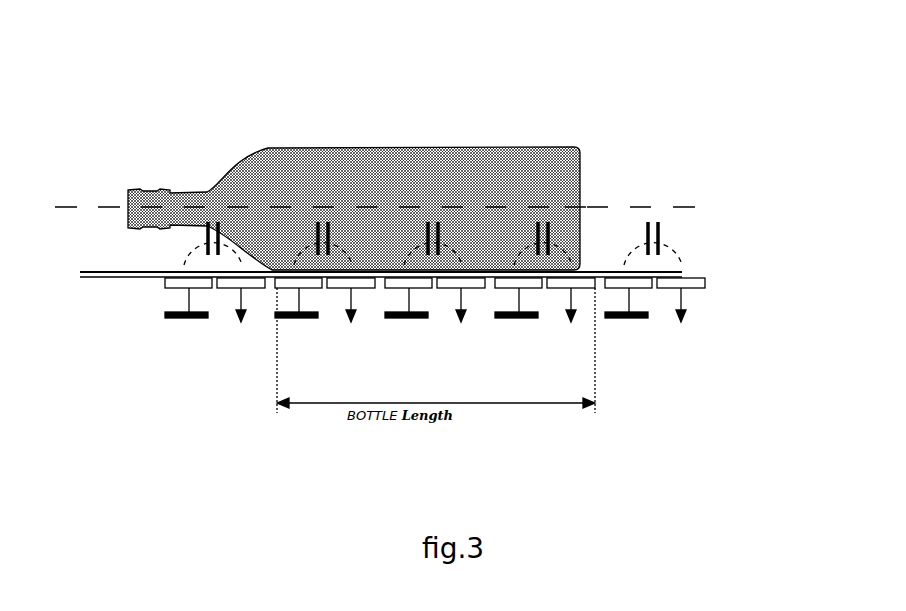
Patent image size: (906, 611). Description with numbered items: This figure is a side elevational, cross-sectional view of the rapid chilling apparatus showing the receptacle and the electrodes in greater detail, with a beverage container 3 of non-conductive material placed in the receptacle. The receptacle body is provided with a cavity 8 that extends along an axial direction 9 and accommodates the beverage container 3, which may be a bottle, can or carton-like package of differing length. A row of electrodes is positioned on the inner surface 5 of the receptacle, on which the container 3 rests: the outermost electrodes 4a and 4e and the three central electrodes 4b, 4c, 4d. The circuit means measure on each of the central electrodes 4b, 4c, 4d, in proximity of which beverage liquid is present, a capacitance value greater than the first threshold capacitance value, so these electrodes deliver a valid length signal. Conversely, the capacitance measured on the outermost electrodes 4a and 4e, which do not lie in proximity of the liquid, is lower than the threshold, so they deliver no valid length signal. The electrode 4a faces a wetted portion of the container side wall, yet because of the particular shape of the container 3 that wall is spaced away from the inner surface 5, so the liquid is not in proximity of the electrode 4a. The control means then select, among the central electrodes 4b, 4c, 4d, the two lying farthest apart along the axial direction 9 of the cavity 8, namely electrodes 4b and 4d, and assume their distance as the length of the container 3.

The beverage container 3 is at (432, 157).
The outermost electrode 4a is at (207, 221).
The central electrode 4b is at (318, 221).
The central electrode 4c is at (428, 221).
The central electrode 4d is at (538, 221).
The outermost electrode 4e is at (650, 221).
The inner surface 5 is at (122, 268).
The cavity 8 is at (643, 163).
The axial direction 9 is at (98, 207).